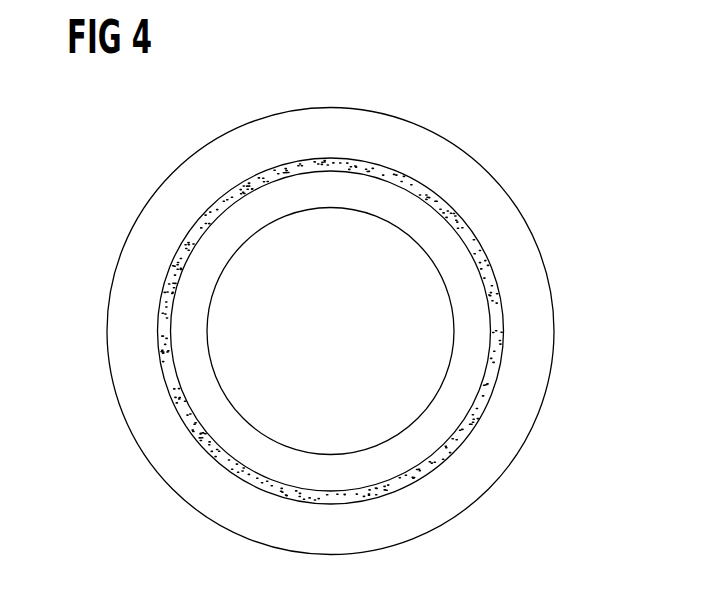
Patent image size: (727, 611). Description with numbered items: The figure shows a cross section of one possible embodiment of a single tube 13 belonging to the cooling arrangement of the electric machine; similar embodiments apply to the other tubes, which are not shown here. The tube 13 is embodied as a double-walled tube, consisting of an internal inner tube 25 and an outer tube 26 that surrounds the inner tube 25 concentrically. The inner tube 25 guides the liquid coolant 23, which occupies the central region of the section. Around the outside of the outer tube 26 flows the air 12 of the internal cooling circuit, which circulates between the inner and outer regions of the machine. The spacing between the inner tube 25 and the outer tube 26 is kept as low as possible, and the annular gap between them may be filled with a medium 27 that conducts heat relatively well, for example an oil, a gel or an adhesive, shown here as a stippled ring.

The air 12 is at (114, 155).
The tube 13 is at (479, 106).
The liquid coolant 23 is at (345, 348).
The inner tube 25 is at (462, 330).
The outer tube 26 is at (535, 360).
The medium 27 is at (495, 278).